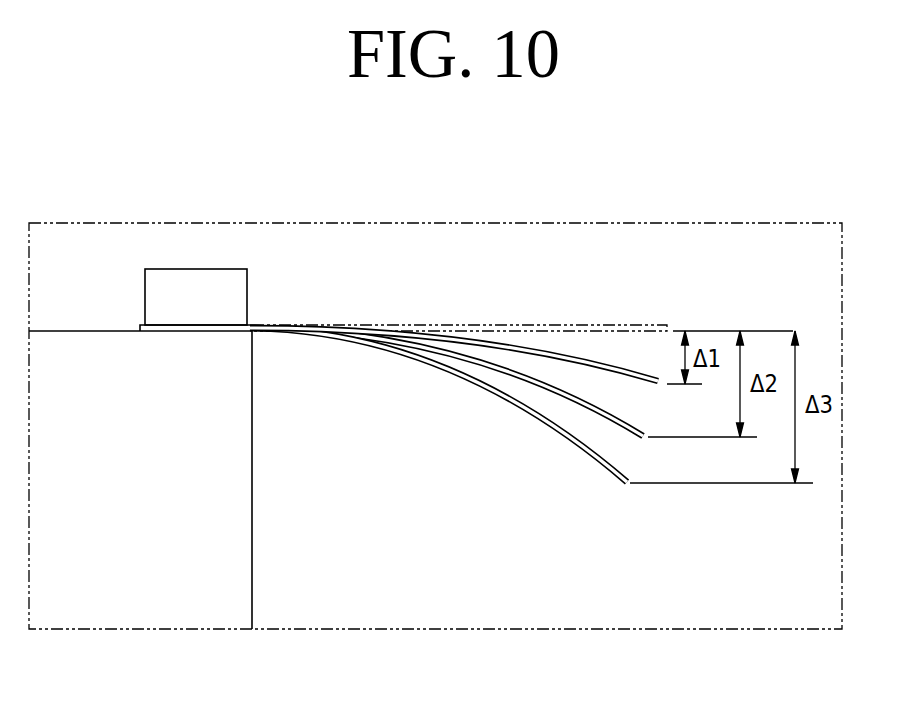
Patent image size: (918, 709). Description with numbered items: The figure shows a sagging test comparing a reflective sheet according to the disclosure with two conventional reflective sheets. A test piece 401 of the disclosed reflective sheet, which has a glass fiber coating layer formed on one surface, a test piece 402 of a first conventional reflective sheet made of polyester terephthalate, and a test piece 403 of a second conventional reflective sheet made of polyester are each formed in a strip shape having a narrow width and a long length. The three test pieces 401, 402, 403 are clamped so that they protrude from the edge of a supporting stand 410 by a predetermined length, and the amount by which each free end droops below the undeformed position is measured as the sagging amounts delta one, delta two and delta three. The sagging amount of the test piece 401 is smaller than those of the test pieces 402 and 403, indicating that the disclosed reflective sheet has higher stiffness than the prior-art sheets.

The test piece of the reflective sheet according to the disclosure 401 is at (627, 372).
The test piece of the first conventional reflective sheet 402 is at (580, 397).
The test piece of the second conventional reflective sheet 403 is at (607, 467).
The supporting stand 410 is at (252, 533).